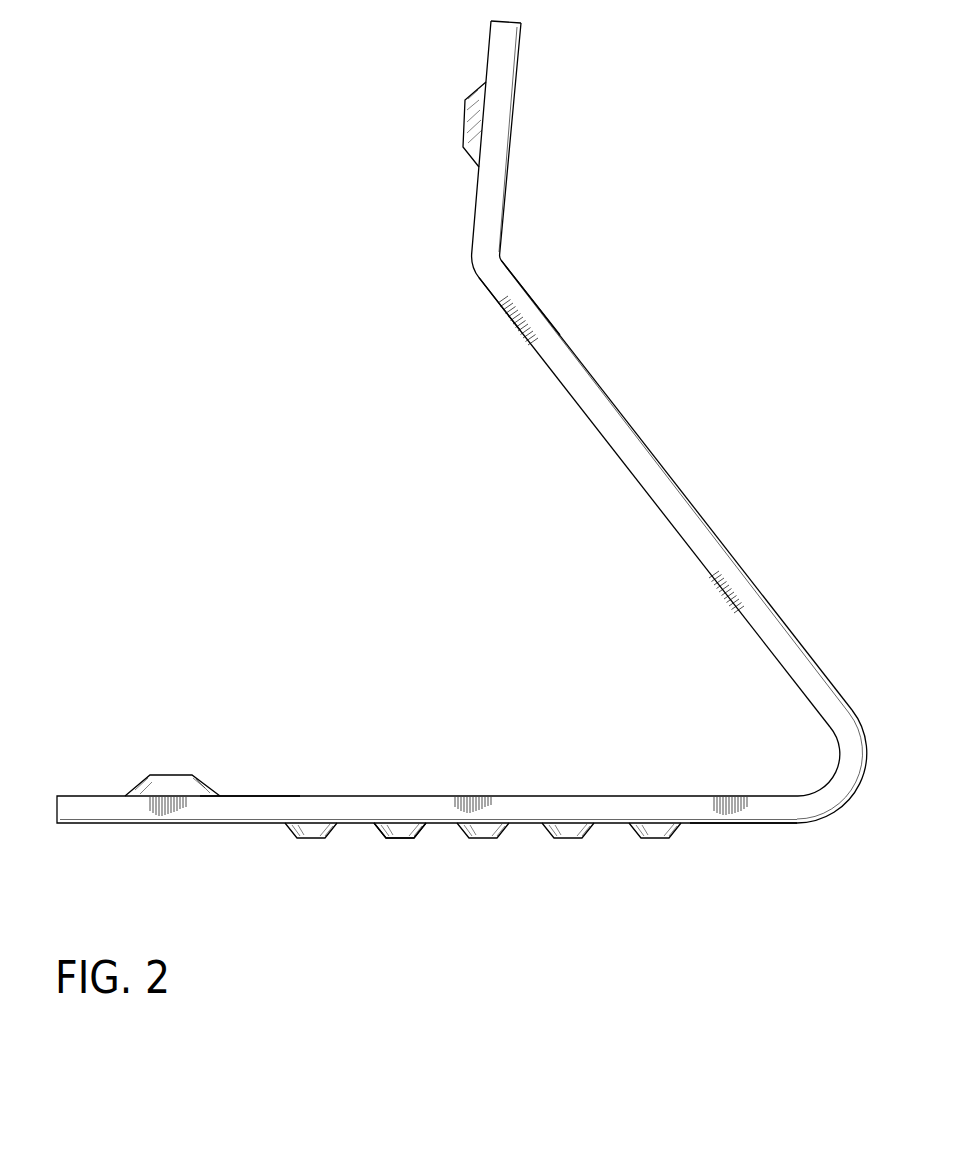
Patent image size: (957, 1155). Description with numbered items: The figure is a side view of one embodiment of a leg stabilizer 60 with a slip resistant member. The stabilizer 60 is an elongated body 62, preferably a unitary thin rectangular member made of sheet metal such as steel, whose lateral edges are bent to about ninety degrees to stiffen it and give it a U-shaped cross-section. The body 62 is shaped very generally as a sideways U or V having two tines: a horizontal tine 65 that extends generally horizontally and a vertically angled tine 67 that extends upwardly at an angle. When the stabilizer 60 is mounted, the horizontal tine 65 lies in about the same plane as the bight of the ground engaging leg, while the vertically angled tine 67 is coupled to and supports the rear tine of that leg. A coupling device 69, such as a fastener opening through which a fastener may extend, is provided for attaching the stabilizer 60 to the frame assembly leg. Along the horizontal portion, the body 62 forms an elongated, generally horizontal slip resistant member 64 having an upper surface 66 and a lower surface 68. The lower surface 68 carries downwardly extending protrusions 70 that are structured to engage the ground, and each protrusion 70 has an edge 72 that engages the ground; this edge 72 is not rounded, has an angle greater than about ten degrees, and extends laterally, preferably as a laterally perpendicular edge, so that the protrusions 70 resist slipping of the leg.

The leg stabilizer 60 is at (462, 487).
The elongated body 62 is at (715, 557).
The slip resistant member 64 is at (373, 808).
The horizontal tine 65 is at (252, 810).
The upper surface 66 is at (642, 796).
The vertically angled tine 67 is at (527, 340).
The lower surface 68 is at (740, 824).
The coupling device 69 is at (463, 123).
The protrusion 70 is at (298, 840).
The edge 72 is at (395, 836).